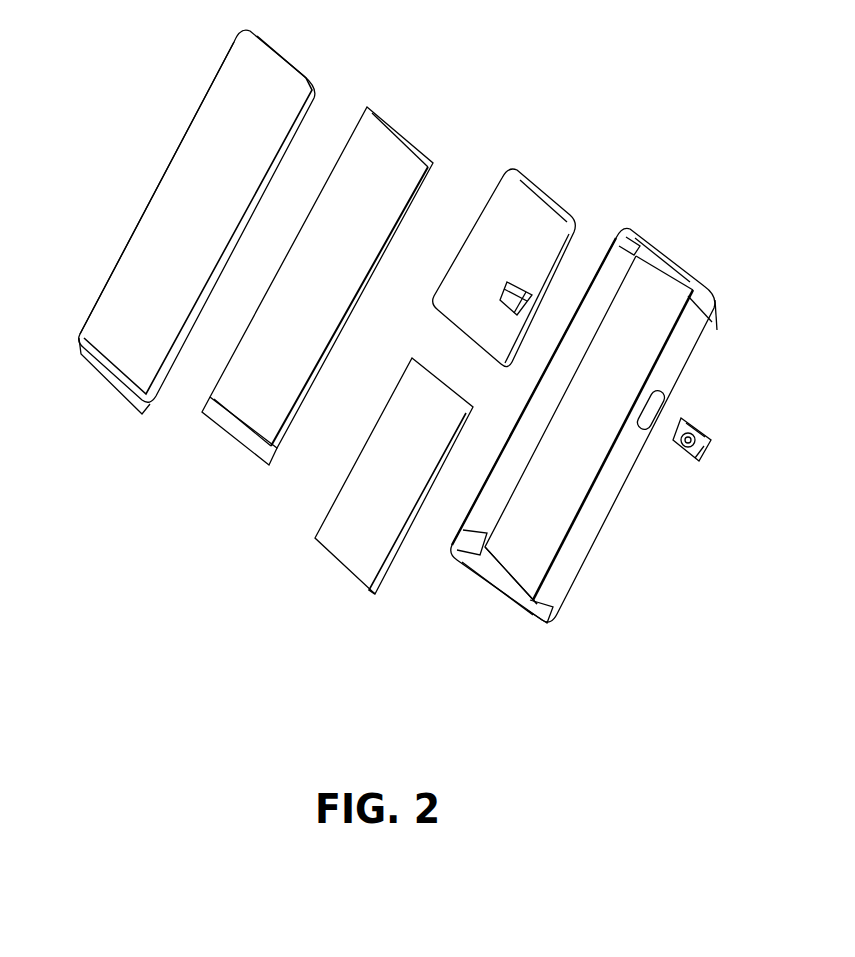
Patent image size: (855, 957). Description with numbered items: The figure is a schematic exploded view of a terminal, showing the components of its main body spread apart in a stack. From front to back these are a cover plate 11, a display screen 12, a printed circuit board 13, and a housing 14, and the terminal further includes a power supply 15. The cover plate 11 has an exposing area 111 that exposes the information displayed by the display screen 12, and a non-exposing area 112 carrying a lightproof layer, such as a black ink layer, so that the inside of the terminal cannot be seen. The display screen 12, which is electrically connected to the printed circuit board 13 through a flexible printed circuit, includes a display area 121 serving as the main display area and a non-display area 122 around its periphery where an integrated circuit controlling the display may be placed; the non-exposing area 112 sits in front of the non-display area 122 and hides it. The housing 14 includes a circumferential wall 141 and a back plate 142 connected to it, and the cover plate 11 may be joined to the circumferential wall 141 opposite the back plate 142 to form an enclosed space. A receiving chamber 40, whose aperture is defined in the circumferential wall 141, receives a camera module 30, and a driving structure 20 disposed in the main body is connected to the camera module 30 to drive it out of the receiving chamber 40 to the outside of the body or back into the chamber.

The cover plate 11 is at (223, 120).
The exposing area 111 is at (165, 194).
The non-exposing area 112 is at (108, 370).
The display screen 12 is at (367, 142).
The display area 121 is at (356, 280).
The non-display area 122 is at (232, 425).
The printed circuit board 13 is at (505, 205).
The housing 14 is at (670, 270).
The circumferential wall 141 is at (608, 493).
The back plate 142 is at (520, 535).
The power supply 15 is at (353, 552).
The driving structure 20 is at (518, 292).
The camera module 30 is at (704, 426).
The receiving chamber 40 is at (648, 418).